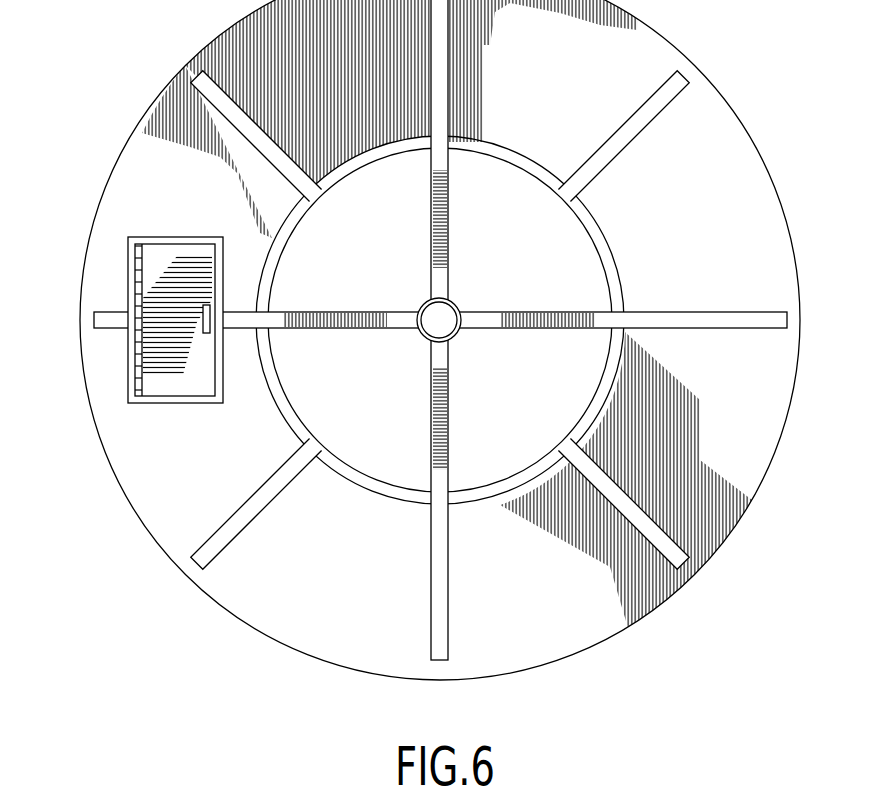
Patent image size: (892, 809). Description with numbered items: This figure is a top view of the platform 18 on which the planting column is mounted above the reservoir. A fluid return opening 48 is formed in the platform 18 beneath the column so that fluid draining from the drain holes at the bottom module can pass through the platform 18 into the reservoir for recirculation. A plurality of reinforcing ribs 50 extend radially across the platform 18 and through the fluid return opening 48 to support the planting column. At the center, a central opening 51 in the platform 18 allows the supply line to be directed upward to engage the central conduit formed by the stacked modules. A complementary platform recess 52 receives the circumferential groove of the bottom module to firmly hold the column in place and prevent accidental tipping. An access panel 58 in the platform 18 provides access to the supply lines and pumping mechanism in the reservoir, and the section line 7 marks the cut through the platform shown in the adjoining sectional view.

The platform 18 is at (753, 188).
The fluid return opening 48 is at (568, 247).
The reinforcing ribs 50 is at (307, 313).
The central opening 51 is at (433, 327).
The platform recess 52 is at (604, 330).
The access panel 58 is at (168, 268).
The section line 7- 7 is at (74, 355).